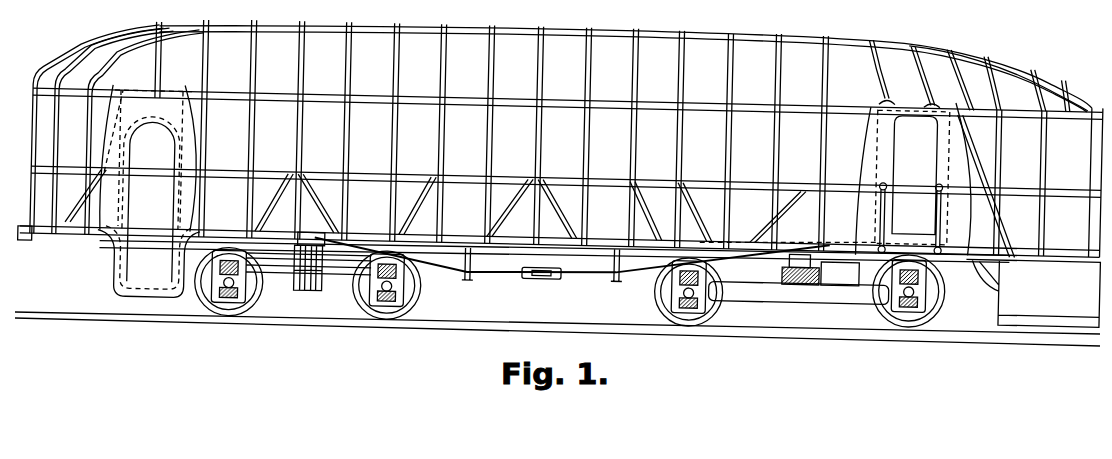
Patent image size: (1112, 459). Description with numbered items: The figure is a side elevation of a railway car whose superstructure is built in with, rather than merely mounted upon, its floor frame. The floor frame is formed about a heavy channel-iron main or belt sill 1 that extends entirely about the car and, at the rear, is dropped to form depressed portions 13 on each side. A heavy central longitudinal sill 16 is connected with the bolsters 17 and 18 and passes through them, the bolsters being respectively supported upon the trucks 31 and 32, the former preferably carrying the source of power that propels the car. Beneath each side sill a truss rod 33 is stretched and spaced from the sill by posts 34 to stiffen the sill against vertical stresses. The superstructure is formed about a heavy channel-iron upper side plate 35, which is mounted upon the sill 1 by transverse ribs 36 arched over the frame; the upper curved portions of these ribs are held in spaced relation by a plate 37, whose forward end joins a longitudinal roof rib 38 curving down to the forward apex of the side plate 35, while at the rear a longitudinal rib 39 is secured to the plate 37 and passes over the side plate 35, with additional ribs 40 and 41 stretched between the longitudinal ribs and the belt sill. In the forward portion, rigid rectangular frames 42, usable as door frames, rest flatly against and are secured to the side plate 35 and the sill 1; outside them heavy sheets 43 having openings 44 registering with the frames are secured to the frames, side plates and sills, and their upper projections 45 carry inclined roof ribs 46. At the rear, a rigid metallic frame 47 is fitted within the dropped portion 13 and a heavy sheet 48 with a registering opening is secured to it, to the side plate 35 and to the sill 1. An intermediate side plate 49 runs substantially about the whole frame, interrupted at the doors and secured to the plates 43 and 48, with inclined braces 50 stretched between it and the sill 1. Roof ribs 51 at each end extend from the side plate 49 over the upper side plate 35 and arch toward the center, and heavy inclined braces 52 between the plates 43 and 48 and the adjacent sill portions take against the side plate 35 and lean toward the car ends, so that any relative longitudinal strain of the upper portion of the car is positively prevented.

The channel-iron sill 1 is at (591, 244).
The depressed portions 13 is at (108, 266).
The central longitudinal sill 16 is at (510, 273).
The bolster 17 is at (802, 252).
The bolster 18 is at (340, 238).
The truck 31 is at (793, 297).
The truck 32 is at (343, 268).
The truss rod 33 is at (572, 279).
The posts 34 is at (466, 278).
The upper side plate 35 is at (564, 100).
The transverse ribs 36 is at (298, 158).
The plate 37 is at (453, 31).
The longitudinal roof rib 38 is at (960, 43).
The longitudinal rib 39 is at (73, 57).
The rib 40 is at (1038, 142).
The rib 41 is at (54, 160).
The rigid rectangular frames 42 is at (875, 156).
The plates or sheets 43 is at (952, 227).
The openings 44 is at (917, 124).
The projections 45 is at (878, 92).
The inclined roof ribs 46 is at (877, 45).
The rigid metallic frame 47 is at (180, 220).
The sheet or plate 48 is at (188, 123).
The intermediate side plate 49 is at (455, 177).
The inclined braces 50 is at (413, 213).
The roof ribs 51 is at (120, 62).
The heavy inclined braces 52 is at (82, 224).